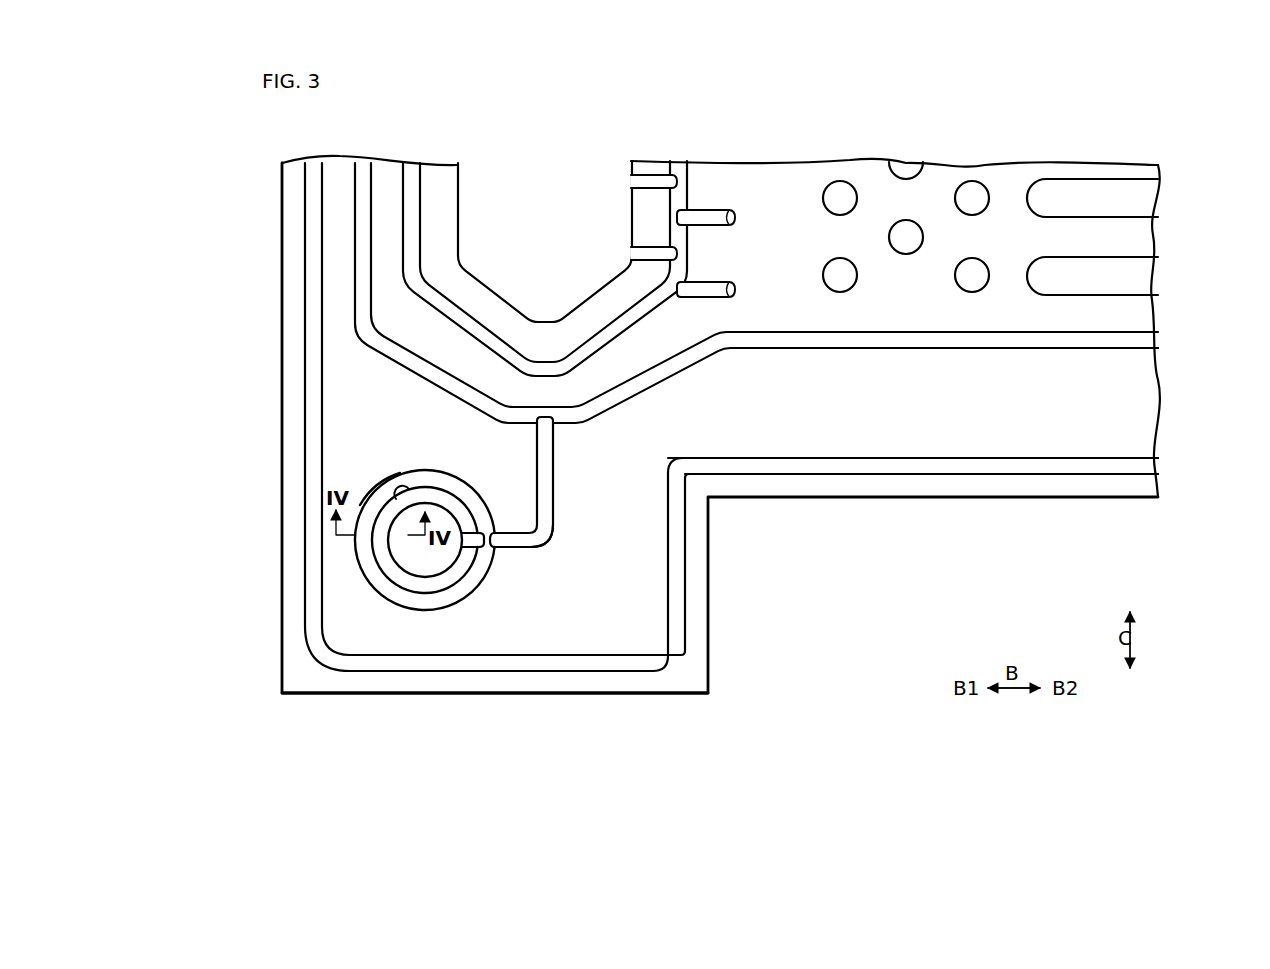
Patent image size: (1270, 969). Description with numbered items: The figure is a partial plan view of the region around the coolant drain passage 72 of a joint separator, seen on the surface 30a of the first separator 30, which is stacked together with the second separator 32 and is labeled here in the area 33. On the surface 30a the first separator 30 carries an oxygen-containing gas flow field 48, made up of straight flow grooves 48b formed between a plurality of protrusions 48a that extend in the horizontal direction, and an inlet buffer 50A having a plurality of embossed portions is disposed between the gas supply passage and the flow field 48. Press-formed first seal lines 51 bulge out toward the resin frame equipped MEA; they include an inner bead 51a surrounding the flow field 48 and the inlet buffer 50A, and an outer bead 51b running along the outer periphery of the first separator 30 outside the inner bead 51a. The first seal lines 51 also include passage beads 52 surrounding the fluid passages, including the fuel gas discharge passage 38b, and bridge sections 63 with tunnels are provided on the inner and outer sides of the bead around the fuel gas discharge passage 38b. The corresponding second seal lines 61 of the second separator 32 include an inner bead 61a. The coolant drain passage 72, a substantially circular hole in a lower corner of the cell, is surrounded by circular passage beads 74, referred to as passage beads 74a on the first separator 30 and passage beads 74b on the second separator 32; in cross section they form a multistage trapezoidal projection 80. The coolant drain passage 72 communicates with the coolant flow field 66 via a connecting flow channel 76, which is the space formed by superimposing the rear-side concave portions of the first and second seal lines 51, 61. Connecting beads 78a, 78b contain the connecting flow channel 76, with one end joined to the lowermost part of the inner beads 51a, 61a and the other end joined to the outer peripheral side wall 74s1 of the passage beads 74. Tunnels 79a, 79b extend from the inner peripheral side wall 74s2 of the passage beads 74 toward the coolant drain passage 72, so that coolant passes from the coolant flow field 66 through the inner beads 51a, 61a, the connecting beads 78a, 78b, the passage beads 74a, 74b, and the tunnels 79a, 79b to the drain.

The first separator 30 is at (279, 645).
The surface of the first separator 30a is at (1112, 432).
The second separator 32 is at (279, 680).
The separator surface region 33 is at (658, 112).
The fuel gas discharge passage 38b is at (492, 200).
The oxygen-containing gas flow field 48 is at (1147, 237).
The protrusions 48a is at (1135, 200).
The straight flow grooves 48b is at (1133, 243).
The inlet buffer 50A is at (840, 198).
The first seal lines 51 is at (756, 360).
The inner bead 51a is at (1005, 340).
The outer bead 51b is at (997, 465).
The passage beads 52 is at (408, 265).
The second seal lines 61 is at (906, 480).
The inner bead 61a is at (1028, 340).
The bridge sections 63 is at (754, 275).
The coolant flow field 66 is at (1137, 315).
The coolant drain passage 72 is at (438, 568).
The passage beads 74 is at (354, 603).
The passage beads 74a is at (387, 592).
The passage beads 74b is at (410, 602).
The outer peripheral side wall 74s1 is at (378, 487).
The inner peripheral side wall 74s2 is at (401, 492).
The connecting flow channel 76 is at (510, 538).
The connecting bead 78a is at (506, 550).
The connecting bead 78b is at (527, 550).
The tunnel 79a is at (466, 550).
The tunnel 79b is at (467, 530).
The projection 80 is at (350, 573).